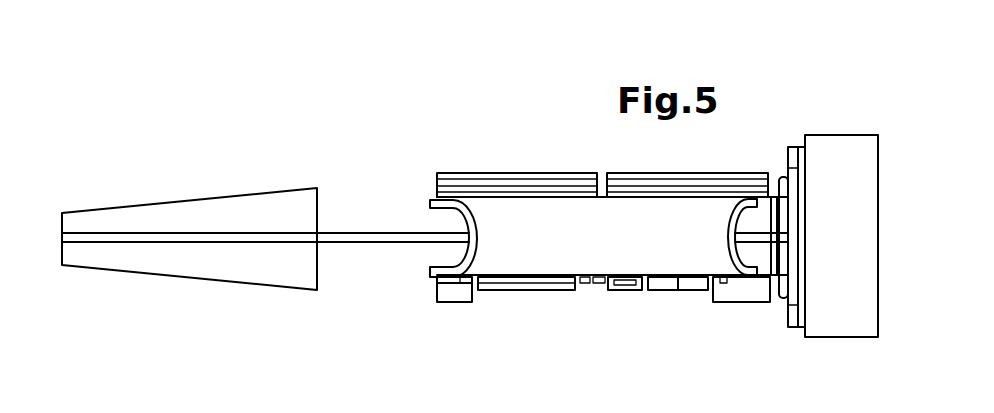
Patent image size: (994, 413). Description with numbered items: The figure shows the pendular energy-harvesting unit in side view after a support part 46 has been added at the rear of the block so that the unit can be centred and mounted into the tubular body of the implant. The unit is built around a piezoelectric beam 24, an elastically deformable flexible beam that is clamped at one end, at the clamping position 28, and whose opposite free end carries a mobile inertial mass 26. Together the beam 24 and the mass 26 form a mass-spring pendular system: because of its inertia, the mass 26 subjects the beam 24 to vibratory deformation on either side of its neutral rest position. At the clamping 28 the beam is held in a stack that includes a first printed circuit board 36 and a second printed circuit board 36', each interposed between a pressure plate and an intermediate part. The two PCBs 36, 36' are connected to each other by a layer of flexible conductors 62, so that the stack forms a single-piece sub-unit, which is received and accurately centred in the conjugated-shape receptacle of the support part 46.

The inertial mass 26 is at (198, 215).
The piezoelectric beam 24 is at (372, 232).
The first printed circuit board 36 is at (433, 203).
The second printed circuit board 36' is at (419, 296).
The layer of flexible conductors 62 is at (555, 212).
The clamping position 28 is at (770, 321).
The support part 46 is at (857, 152).